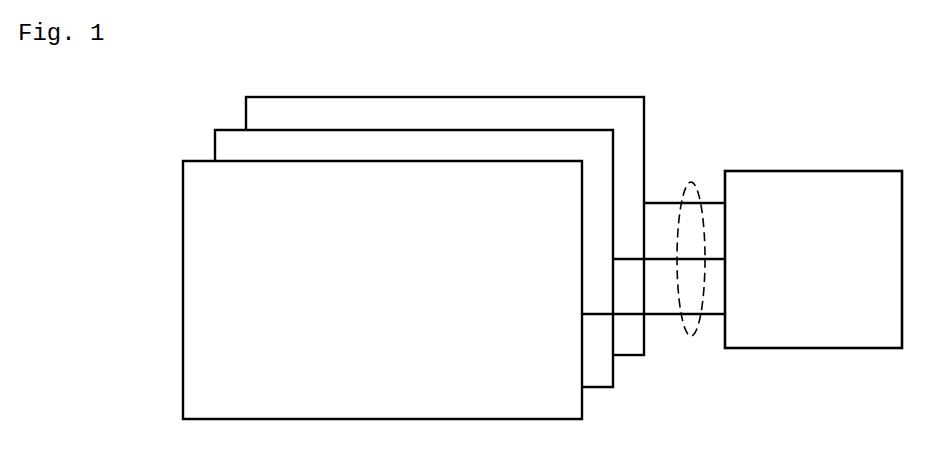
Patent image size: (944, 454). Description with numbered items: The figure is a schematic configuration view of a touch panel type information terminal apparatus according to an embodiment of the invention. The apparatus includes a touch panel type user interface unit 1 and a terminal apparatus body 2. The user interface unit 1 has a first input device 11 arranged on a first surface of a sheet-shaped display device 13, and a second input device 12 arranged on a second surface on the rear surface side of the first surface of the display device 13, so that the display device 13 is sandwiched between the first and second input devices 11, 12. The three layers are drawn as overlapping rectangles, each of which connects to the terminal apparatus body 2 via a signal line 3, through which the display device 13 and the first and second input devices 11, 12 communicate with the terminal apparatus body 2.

The touch panel type user interface unit 1 is at (98, 402).
The terminal apparatus body 2 is at (813, 171).
The signal line 3 is at (694, 183).
The first input device 11 is at (183, 208).
The second input device 12 is at (246, 105).
The display device 13 is at (215, 140).